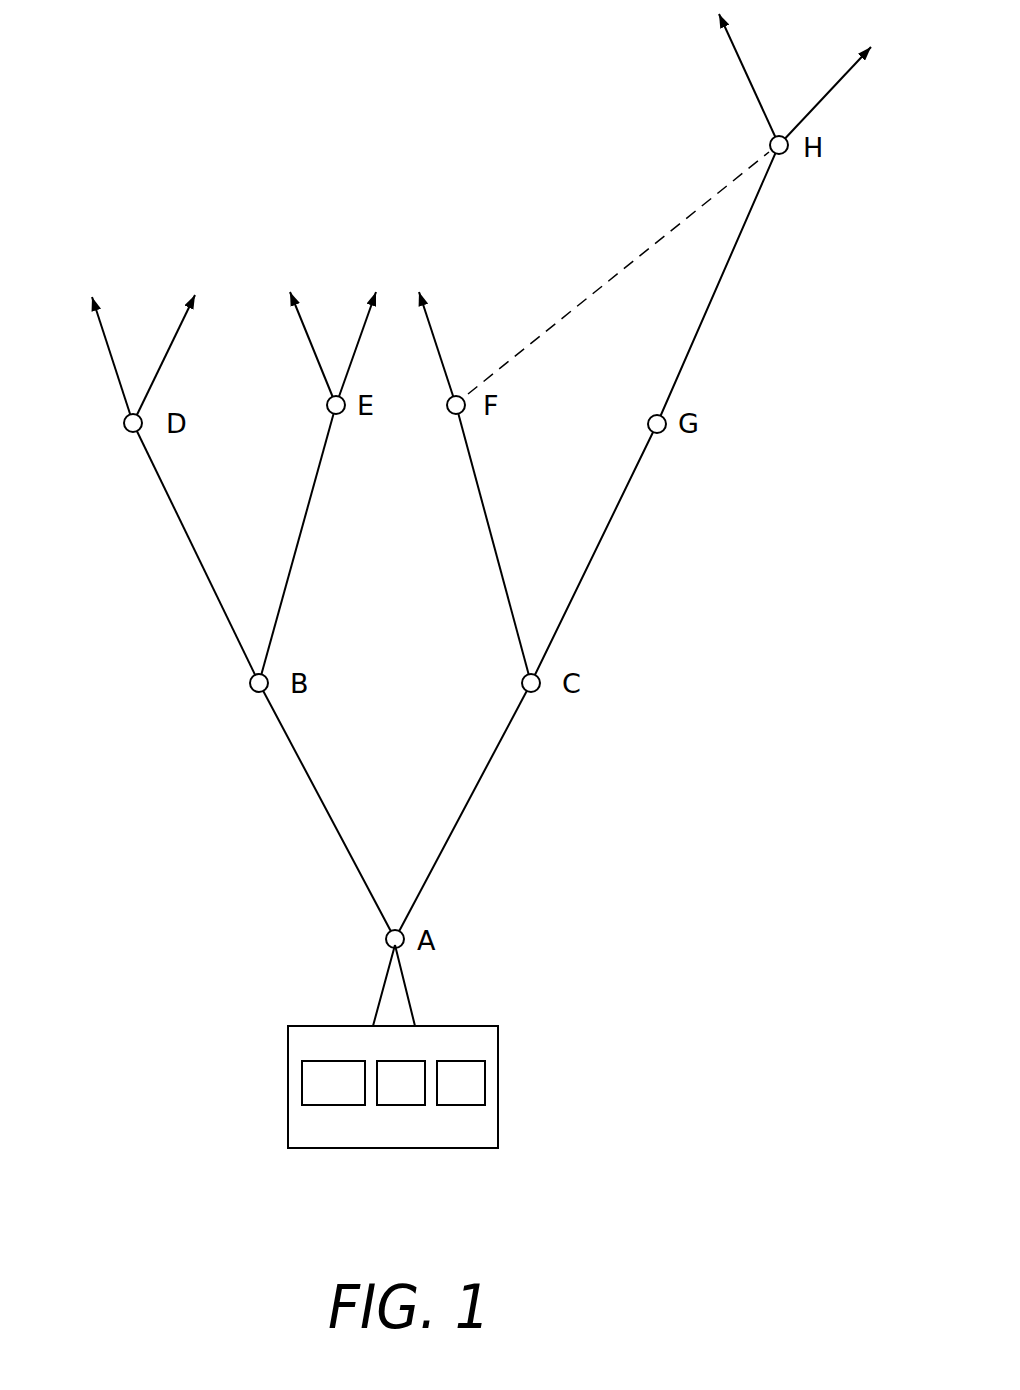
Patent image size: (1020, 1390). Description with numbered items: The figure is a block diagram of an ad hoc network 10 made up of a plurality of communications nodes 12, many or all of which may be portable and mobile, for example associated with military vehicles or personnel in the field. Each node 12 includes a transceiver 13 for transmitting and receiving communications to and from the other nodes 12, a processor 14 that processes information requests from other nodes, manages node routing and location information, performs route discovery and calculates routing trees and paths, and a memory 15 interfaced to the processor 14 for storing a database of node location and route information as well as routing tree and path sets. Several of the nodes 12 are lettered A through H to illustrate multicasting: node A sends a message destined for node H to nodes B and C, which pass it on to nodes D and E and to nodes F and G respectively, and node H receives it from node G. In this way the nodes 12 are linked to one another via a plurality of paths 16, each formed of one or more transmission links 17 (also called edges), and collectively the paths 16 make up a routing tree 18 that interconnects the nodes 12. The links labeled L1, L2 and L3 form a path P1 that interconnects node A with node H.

The ad hoc network 10 is at (811, 642).
The communications node 12 is at (522, 682).
The transceiver 13 is at (332, 1107).
The processor 14 is at (402, 1107).
The memory 15 is at (467, 1107).
The path 16 is at (203, 605).
The transmission link 17 is at (173, 513).
The routing tree 18 is at (183, 879).
The path P1 is at (498, 753).
The link L1 is at (468, 803).
The link L2 is at (583, 578).
The link L3 is at (725, 268).